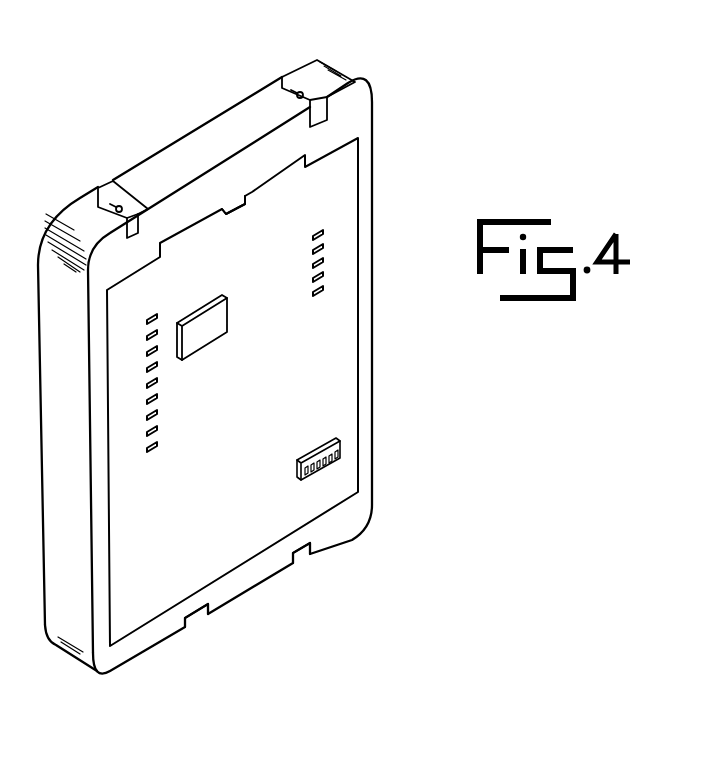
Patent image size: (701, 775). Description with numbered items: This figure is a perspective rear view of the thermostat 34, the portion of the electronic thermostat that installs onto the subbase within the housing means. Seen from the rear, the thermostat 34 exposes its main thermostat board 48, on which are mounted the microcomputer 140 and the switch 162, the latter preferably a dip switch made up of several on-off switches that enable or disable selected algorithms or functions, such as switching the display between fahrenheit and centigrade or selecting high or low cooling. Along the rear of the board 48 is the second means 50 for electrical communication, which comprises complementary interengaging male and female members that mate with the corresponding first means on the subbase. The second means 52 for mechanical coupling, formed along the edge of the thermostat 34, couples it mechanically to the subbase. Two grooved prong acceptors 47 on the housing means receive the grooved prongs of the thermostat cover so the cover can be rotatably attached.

The thermostat 34 is at (393, 150).
The grooved prong acceptors 47 is at (112, 190).
The main thermostat board 48 is at (323, 340).
The second means for electrical communication 50 is at (311, 263).
The second means for mechanical coupling 52 is at (237, 200).
The microcomputer 140 is at (205, 296).
The switch 162 is at (320, 436).